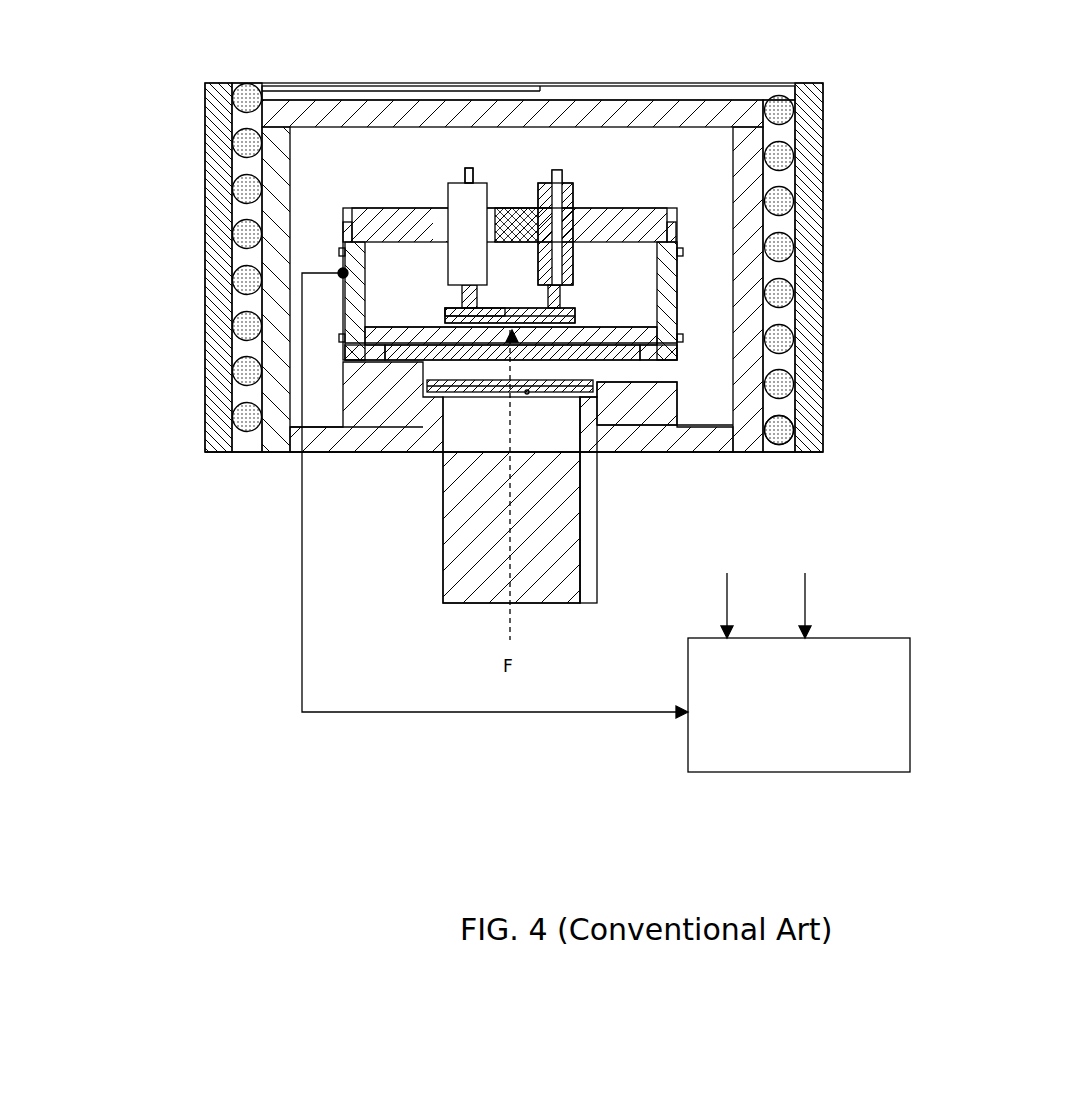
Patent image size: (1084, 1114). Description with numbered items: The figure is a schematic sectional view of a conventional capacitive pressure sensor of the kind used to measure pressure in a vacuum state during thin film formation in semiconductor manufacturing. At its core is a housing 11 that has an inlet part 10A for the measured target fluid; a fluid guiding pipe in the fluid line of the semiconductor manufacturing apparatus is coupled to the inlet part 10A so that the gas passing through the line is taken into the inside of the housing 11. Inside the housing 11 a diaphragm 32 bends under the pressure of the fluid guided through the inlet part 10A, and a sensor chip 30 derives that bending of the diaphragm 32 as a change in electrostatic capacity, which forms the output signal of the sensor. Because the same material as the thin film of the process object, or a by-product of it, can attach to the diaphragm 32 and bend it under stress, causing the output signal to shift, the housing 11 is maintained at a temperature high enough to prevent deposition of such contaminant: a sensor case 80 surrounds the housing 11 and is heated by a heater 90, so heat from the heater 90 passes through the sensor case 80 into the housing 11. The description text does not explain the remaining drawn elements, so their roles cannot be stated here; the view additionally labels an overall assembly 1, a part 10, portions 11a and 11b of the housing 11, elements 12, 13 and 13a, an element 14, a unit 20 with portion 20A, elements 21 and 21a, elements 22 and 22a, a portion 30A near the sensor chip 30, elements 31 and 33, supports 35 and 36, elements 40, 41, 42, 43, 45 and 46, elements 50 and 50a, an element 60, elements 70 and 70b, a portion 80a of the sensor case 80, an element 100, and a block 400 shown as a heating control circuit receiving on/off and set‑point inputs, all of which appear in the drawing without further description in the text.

The heating apparatus 1 is at (858, 84).
The heater 10 is at (371, 230).
The inlet part 10A is at (545, 585).
The housing 11 is at (343, 360).
The pedestal 11a is at (655, 410).
The stem 11b is at (592, 578).
The side wall 12 is at (337, 258).
The top flange 13 is at (362, 209).
The through hole 13a is at (577, 204).
The temperature sensor 14 is at (339, 279).
The casing 20 is at (561, 343).
The heating unit 20A is at (505, 425).
The casing bottom 21 is at (672, 360).
The center hole 21a is at (513, 368).
The casing side wall 22 is at (657, 312).
The hook 22a is at (440, 326).
The sensor chip 30 is at (588, 308).
The heating surface 30A is at (490, 313).
The base plate 31 is at (417, 326).
The diaphragm 32 is at (530, 392).
The heater element 33 is at (448, 318).
The support post 35 is at (465, 300).
The support post 36 is at (562, 303).
The thermocouple 40 is at (438, 176).
The lead wire 41 is at (467, 170).
The sheath 42 is at (575, 193).
The rod 43 is at (540, 215).
The cylinder 45 is at (470, 265).
The nut 46 is at (574, 258).
The heat insulator 50 is at (230, 428).
The signal line 50a is at (312, 448).
The bushing 60 is at (503, 200).
The heater 70 is at (473, 393).
The heater terminal 70b is at (438, 452).
The sensor case 80 is at (268, 98).
The step 80a is at (510, 92).
The heater 90 is at (780, 455).
The housing 100 is at (205, 452).
The heating control circuit 400 is at (840, 637).